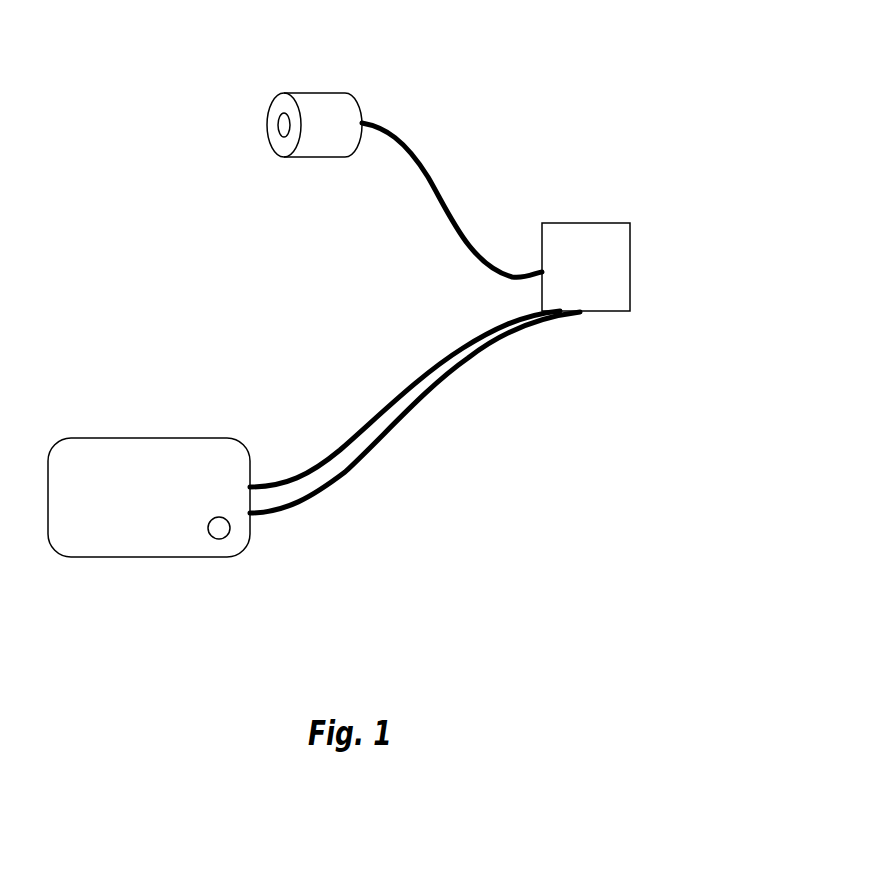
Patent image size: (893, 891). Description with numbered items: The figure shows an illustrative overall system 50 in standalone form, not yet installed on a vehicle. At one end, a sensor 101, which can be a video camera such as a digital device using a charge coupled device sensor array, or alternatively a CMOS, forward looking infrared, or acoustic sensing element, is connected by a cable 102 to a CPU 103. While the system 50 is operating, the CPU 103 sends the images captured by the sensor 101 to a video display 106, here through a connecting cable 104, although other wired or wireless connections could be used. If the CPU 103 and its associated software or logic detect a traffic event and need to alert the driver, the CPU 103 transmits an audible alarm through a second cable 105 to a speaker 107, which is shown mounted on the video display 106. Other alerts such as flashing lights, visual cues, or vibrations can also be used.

The overall system 50 is at (699, 119).
The sensor 101 is at (318, 92).
The cable 102 is at (415, 148).
The CPU 103 is at (598, 223).
The connecting cable 104 is at (298, 478).
The cable 105 is at (298, 511).
The video display 106 is at (90, 438).
The speaker 107 is at (210, 541).